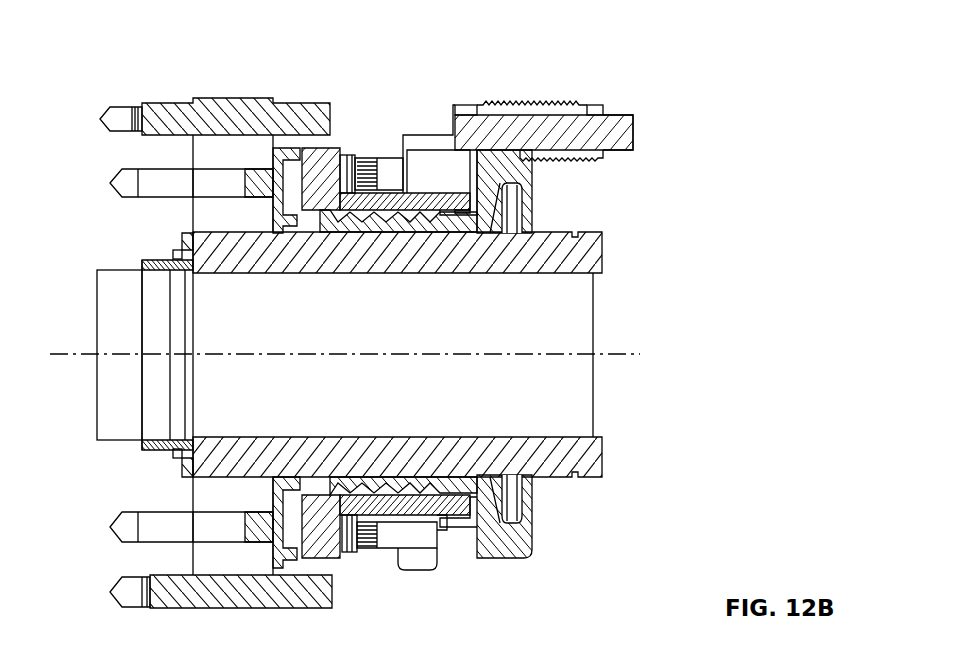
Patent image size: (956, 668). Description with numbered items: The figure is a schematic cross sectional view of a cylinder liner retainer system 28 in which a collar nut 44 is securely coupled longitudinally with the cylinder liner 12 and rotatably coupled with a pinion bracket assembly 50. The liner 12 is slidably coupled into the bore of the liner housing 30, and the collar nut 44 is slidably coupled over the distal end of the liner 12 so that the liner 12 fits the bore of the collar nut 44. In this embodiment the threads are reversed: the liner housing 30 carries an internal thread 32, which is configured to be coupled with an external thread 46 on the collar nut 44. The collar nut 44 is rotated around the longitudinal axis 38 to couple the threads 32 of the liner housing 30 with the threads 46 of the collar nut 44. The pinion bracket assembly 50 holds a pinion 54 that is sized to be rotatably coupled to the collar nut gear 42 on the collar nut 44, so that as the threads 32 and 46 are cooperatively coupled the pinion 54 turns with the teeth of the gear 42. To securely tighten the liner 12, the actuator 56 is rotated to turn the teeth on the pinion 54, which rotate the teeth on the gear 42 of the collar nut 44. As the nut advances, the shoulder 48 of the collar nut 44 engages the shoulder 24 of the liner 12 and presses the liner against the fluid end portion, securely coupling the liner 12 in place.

The liner 12 is at (588, 254).
The shoulder 24 is at (324, 224).
The cylinder liner retainer system 28 is at (219, 49).
The liner housing 30 is at (259, 99).
The internal thread 32 is at (420, 218).
The longitudinal axis 38 is at (634, 350).
The collar nut gear 42 is at (510, 152).
The collar nut 44 is at (532, 172).
The external thread 46 is at (418, 212).
The shoulder 48 is at (340, 222).
The pinion bracket assembly 50 is at (332, 150).
The pinion 54 is at (532, 102).
The actuator 56 is at (634, 133).